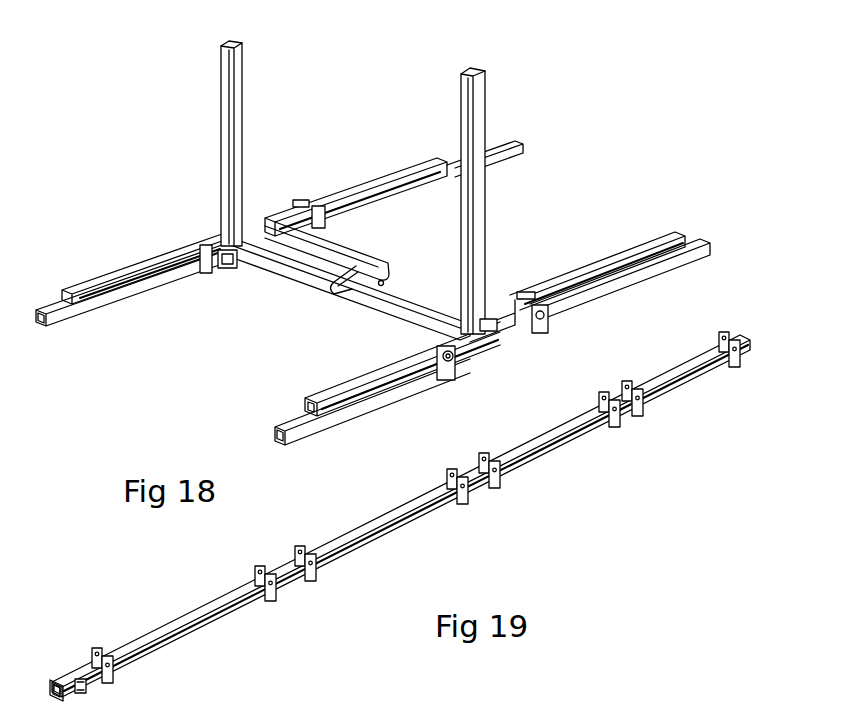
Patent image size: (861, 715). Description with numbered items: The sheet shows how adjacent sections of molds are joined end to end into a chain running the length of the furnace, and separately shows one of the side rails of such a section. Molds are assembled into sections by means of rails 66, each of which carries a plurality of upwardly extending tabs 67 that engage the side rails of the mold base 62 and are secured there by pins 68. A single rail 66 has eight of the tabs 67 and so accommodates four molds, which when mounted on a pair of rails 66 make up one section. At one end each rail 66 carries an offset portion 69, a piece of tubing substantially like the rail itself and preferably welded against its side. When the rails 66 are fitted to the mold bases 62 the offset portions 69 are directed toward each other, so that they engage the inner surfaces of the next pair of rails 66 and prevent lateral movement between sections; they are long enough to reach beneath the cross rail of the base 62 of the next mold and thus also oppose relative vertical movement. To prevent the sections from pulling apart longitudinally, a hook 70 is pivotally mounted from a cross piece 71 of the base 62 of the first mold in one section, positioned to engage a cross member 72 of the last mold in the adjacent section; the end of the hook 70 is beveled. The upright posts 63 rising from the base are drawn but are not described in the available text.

In FIG. 18, the base 62 is at (369, 186).
In FIG. 18, the upright post 63 is at (222, 132).
In FIG. 18, the rail 66 is at (646, 270).
In FIG. 19, the rail 66 is at (381, 527).
In FIG. 18, the tab 67 is at (452, 374).
In FIG. 19, the tab 67 is at (113, 660).
In FIG. 18, the pin 68 is at (458, 357).
In FIG. 18, the offset portion 69 is at (249, 269).
In FIG. 19, the offset portion 69 is at (62, 680).
In FIG. 18, the hook 70 is at (329, 289).
In FIG. 18, the cross piece 71 is at (379, 262).
In FIG. 18, the cross member 72 is at (363, 298).